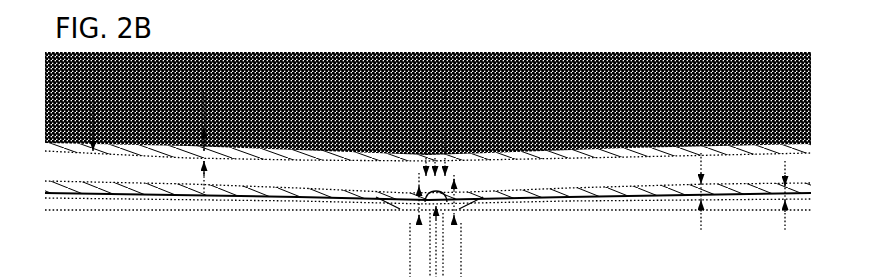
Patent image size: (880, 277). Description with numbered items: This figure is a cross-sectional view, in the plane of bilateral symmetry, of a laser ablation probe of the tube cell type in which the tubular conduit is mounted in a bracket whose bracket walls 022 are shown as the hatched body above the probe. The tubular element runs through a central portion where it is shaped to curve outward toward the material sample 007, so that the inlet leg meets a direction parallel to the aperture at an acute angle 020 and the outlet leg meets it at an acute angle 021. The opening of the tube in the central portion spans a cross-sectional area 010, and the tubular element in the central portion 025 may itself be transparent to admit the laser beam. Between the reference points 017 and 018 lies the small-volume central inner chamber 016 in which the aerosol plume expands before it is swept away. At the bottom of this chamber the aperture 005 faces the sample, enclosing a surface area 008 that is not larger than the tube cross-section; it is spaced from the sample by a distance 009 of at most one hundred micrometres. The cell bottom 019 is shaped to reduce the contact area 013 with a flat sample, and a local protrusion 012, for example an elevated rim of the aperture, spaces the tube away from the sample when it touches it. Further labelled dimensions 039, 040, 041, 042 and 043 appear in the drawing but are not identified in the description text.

The bracket walls 022 is at (550, 87).
The cross-sectional area 010 is at (95, 89).
The second region 039 is at (213, 88).
The central inner chamber 016 is at (433, 90).
The tubular element in the central portion 025 is at (312, 122).
The end portion of the central chamber 017 is at (385, 150).
The end portion of the central chamber 018 is at (438, 118).
The acute angle 020 is at (101, 205).
The distance 009 is at (411, 165).
The flow region 042 is at (455, 153).
The acute angle 021 is at (777, 153).
The local protrusion 012 is at (402, 196).
The lower sublayer thickness 040 is at (160, 228).
The bottom sublayer 041 is at (290, 191).
The aperture 005 is at (422, 247).
The contact area 013 is at (372, 225).
The cell bottom 019 is at (456, 196).
The surface area 008 is at (435, 247).
The right lower gap 043 is at (777, 218).
The material sample 007 is at (596, 222).